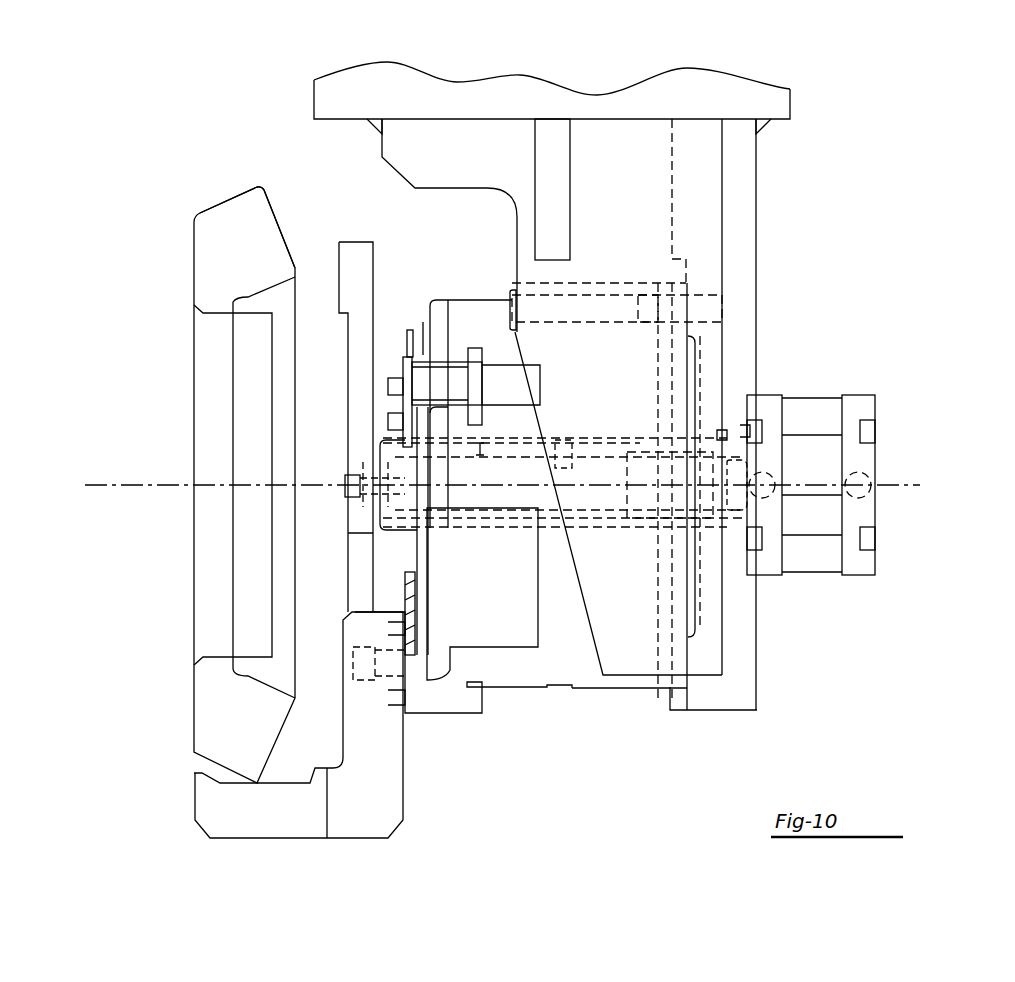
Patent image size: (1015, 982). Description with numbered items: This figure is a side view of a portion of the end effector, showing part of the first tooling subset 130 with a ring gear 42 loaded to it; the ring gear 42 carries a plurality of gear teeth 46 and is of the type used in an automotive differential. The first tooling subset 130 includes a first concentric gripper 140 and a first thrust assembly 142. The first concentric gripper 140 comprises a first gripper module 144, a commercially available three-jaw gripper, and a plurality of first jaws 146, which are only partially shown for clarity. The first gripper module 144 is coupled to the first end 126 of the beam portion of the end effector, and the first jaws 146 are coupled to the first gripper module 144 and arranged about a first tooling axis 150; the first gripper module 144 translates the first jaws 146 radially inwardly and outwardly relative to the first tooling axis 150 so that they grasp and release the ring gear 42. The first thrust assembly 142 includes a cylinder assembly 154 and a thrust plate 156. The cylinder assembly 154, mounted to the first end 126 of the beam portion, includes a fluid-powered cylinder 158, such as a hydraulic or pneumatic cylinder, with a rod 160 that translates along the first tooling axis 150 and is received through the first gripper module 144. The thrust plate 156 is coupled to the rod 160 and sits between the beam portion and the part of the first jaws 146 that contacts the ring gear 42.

The first end 126 is at (707, 84).
The ring gear 42 is at (199, 262).
The gear teeth 46 is at (222, 200).
The first thrust assembly 142 is at (380, 266).
The thrust plate 156 is at (397, 300).
The first tooling axis 150 is at (92, 480).
The first concentric gripper 140 is at (553, 668).
The first gripper module 144 is at (570, 618).
The rod 160 is at (596, 470).
The cylinder assembly 154 is at (868, 452).
The fluid-powered cylinder 158 is at (868, 516).
The first tooling subset 130 is at (568, 760).
The first jaws 146 is at (272, 826).